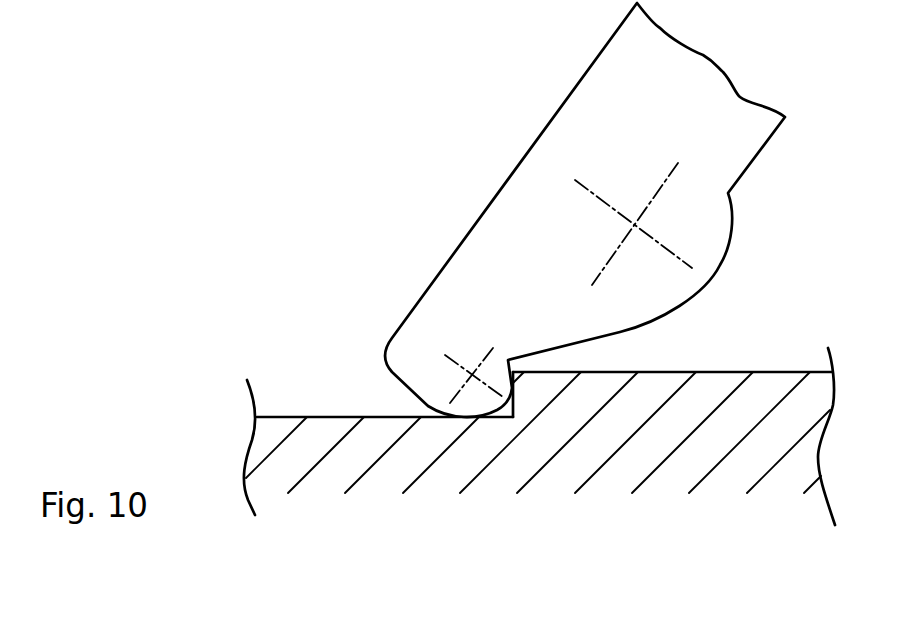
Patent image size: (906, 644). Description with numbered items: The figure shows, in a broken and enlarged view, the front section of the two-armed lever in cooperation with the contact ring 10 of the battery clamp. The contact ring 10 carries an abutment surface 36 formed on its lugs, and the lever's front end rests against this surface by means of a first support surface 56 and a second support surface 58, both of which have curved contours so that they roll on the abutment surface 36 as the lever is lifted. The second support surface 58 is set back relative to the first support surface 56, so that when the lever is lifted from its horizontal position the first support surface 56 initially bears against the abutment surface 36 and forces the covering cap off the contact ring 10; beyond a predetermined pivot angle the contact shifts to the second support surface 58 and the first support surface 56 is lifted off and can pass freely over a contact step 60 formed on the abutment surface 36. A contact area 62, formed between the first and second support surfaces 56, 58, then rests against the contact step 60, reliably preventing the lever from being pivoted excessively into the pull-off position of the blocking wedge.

The contact ring 10 is at (298, 447).
The abutment surface 36 is at (343, 412).
The first support surface 56 is at (734, 240).
The second support surface 58 is at (505, 405).
The contact step 60 is at (505, 405).
The contact area 62 is at (515, 367).